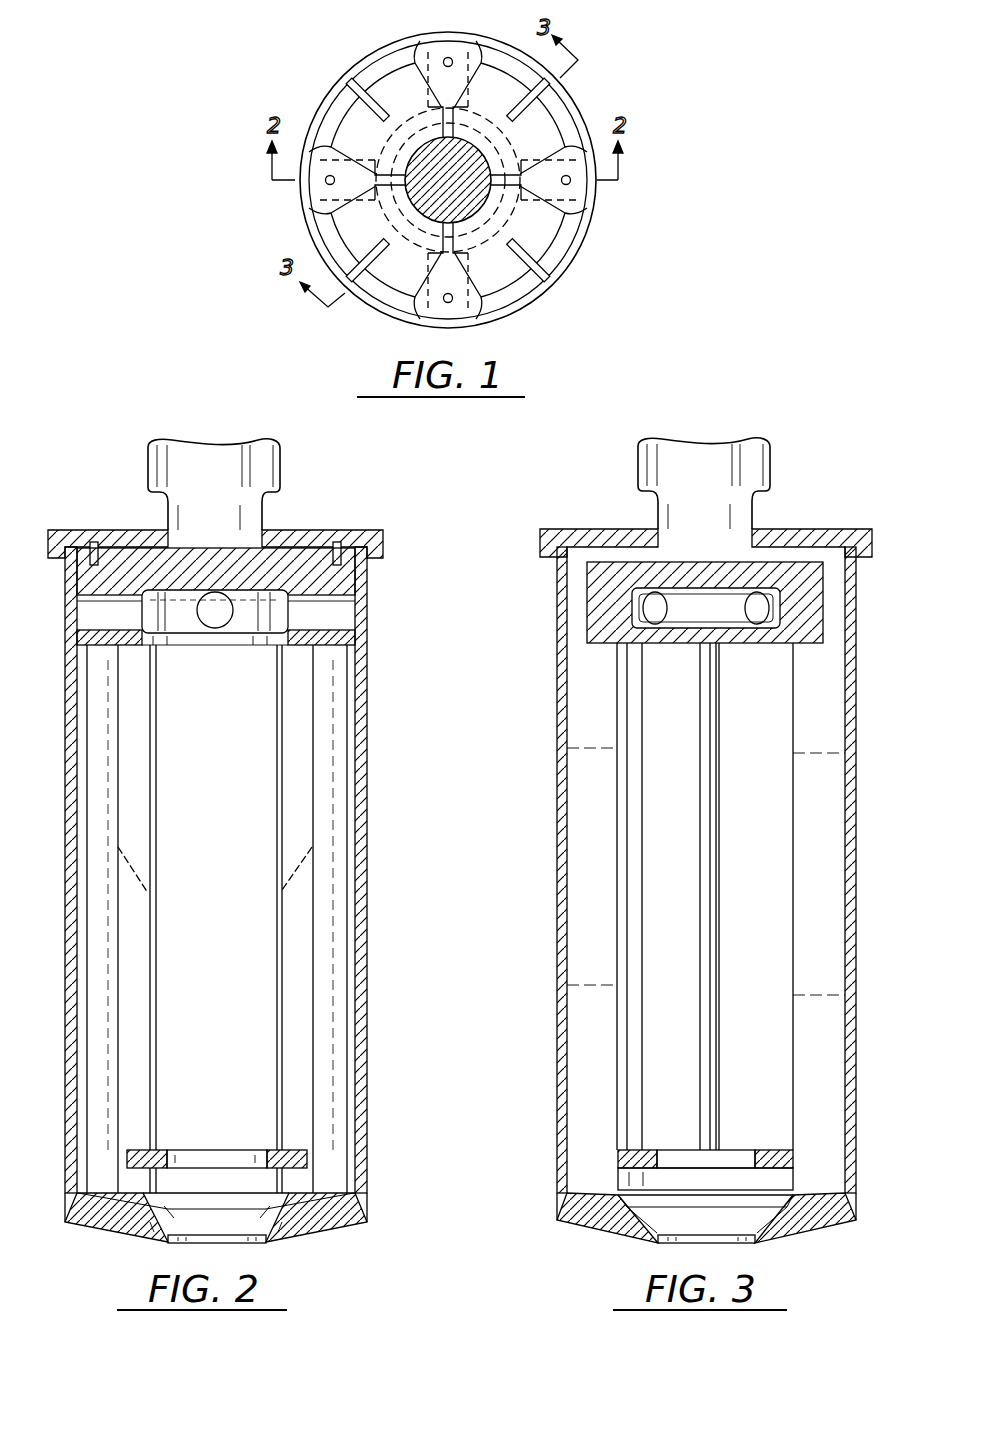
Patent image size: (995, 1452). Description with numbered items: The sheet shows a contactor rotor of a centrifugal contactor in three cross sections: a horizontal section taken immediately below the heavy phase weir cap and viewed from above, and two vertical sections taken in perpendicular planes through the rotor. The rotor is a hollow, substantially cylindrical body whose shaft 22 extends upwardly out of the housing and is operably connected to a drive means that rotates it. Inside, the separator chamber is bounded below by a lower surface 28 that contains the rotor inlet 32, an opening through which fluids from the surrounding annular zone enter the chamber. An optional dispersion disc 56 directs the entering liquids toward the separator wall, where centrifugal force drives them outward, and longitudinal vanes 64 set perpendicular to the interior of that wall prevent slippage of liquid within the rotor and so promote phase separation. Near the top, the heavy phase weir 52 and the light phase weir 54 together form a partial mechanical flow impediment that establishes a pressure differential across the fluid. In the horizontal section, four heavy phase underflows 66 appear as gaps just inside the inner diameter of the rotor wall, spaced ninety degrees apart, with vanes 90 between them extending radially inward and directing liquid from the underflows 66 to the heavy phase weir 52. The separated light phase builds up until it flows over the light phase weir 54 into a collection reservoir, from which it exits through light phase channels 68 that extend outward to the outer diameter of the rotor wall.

In FIG. 2, the shaft 22 is at (185, 520).
In FIG. 2, the lower surface 28 is at (130, 1228).
In FIG. 2, the rotor inlet 32 is at (250, 1247).
In FIG. 2, the heavy phase weir 52 is at (268, 530).
In FIG. 3, the heavy phase weir 52 is at (758, 530).
In FIG. 2, the light phase weir 54 is at (268, 640).
In FIG. 3, the light phase weir 54 is at (757, 640).
In FIG. 2, the dispersion disc 56 is at (307, 1158).
In FIG. 2, the longitudinal vanes 64 is at (302, 1185).
In FIG. 1, the heavy phase underflows 66 is at (383, 70).
In FIG. 3, the heavy phase underflows 66 is at (837, 595).
In FIG. 2, the light phase channels 68 is at (343, 615).
In FIG. 3, the light phase channels 68 is at (752, 620).
In FIG. 1, the vanes 90 is at (476, 48).